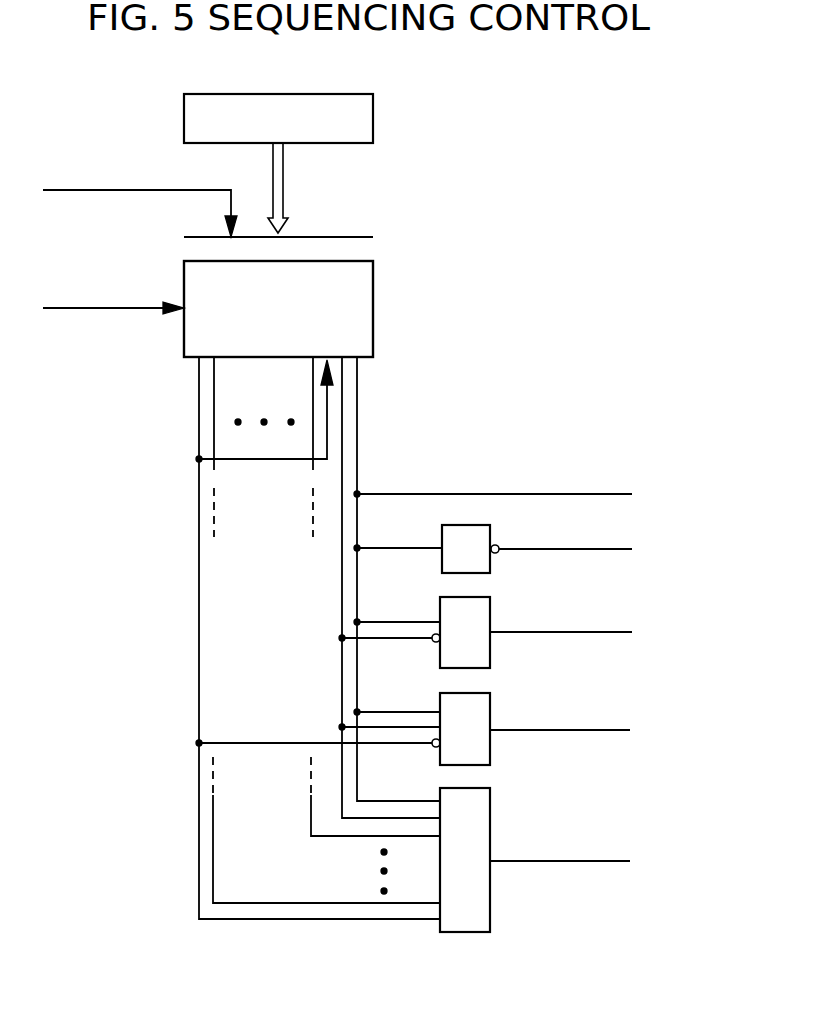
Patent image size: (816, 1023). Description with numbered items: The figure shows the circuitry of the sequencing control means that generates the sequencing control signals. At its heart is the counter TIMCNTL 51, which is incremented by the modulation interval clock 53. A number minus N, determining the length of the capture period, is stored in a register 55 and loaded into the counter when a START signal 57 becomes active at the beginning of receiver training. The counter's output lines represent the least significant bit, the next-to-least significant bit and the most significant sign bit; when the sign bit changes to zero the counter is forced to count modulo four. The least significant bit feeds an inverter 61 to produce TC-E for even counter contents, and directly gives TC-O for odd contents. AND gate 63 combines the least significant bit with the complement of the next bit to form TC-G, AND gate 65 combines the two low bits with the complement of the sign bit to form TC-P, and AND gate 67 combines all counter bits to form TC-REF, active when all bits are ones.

The register 55 is at (373, 118).
The START signal 57 is at (99, 191).
The counter TIMCNTL 51 is at (373, 302).
The modulation interval clock 53 is at (99, 309).
The inverter 61 is at (490, 535).
The AND gate 63 is at (490, 607).
The AND gate 65 is at (490, 703).
The AND gate 67 is at (490, 798).